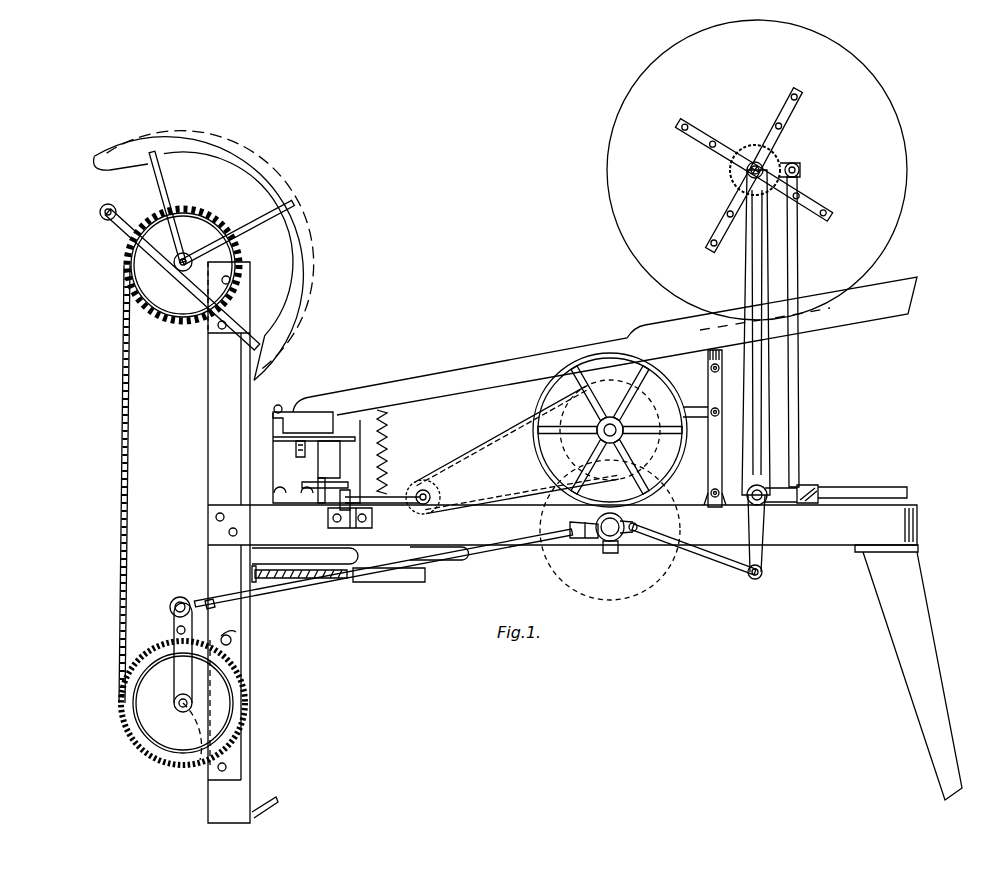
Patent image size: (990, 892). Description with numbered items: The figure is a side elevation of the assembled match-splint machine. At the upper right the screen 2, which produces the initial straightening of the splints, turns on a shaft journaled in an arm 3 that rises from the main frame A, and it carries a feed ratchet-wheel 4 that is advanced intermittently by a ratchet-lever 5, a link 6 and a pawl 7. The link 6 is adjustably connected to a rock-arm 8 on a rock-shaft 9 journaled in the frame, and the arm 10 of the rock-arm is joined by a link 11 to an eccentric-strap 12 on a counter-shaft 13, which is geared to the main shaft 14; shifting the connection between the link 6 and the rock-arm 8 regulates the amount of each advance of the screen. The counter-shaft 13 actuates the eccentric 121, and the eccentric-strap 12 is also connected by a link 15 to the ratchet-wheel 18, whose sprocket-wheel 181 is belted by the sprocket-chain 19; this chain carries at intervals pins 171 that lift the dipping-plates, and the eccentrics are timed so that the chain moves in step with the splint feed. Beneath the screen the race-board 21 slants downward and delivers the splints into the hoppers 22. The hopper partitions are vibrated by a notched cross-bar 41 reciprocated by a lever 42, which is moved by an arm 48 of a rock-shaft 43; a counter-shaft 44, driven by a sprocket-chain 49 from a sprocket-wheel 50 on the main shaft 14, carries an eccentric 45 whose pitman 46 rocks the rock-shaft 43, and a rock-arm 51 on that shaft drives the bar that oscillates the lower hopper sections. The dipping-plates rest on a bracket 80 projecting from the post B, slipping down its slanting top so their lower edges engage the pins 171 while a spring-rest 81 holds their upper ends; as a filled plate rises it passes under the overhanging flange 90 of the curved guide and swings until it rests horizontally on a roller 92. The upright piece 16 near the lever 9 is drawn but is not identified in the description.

The screen 2 is at (757, 170).
The arm 3 is at (756, 332).
The feed ratchet-wheel 4 is at (755, 145).
The ratchet-lever 5 is at (795, 165).
The link 6 is at (798, 272).
The pawl 7 is at (801, 170).
The rock-arm 8 is at (840, 492).
The rock-shaft 9 is at (760, 510).
The arm 10 is at (770, 566).
The link 11 is at (694, 553).
The eccentric-strap 12 is at (628, 526).
The counter-shaft 13 is at (600, 538).
The main shaft 14 is at (618, 428).
The link 15 is at (478, 548).
The upright bracket 16 is at (715, 428).
The pins 171 is at (120, 388).
The ratchet-wheel 18 is at (183, 681).
The sprocket-chain 19 is at (127, 545).
The race-board 21 is at (558, 356).
The hoppers 22 is at (316, 458).
The cross-bar 41 is at (291, 411).
The lever 42 is at (289, 452).
The rock-shaft 43 is at (355, 448).
The counter-shaft 44 is at (434, 490).
The eccentric 45 is at (418, 510).
The pitman 46 is at (394, 506).
The arm 48 is at (328, 459).
The sprocket-chain 49 is at (494, 430).
The sprocket-wheel 50 is at (610, 430).
The rock-arm 51 is at (325, 483).
The bracket 80 is at (270, 797).
The spring-rest 81 is at (298, 576).
The overhanging flange 90 is at (252, 168).
The roller 92 is at (107, 218).
The eccentric 121 is at (620, 545).
The sprocket-wheel 181 is at (177, 325).